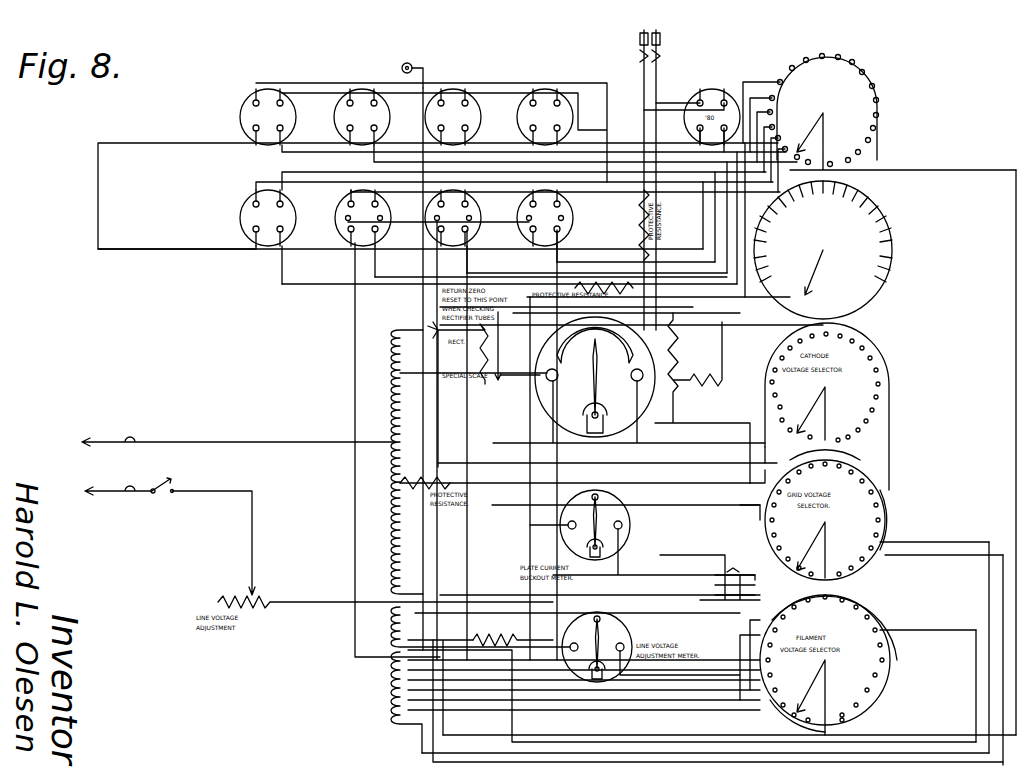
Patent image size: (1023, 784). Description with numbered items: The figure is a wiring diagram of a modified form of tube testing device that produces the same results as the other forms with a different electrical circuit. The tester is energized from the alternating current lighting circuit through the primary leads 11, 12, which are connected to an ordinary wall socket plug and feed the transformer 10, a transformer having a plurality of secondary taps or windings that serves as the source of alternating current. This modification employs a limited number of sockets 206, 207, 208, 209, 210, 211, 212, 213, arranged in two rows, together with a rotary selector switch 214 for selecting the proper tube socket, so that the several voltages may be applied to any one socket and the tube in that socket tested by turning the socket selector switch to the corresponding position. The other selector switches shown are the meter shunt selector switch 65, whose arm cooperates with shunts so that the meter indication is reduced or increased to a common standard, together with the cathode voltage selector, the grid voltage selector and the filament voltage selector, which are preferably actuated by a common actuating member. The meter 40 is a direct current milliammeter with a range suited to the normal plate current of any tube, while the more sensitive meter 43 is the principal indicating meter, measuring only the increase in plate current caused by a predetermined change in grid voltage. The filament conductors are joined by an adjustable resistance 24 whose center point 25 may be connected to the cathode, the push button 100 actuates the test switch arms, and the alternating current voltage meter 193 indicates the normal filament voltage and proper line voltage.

The tube socket 206 is at (270, 88).
The tube socket 207 is at (362, 88).
The tube socket 208 is at (458, 88).
The tube socket 209 is at (552, 88).
The tube socket 210 is at (240, 217).
The tube socket 211 is at (340, 232).
The tube socket 212 is at (472, 230).
The tube socket 213 is at (574, 217).
The rotary selector switch 214 is at (865, 92).
The selector switch 65 is at (860, 246).
The meter 43 is at (540, 400).
The primary lead 11 is at (240, 442).
The primary lead 12 is at (213, 493).
The transformer 10 is at (396, 535).
The meter 40 is at (565, 540).
The push button 100 is at (727, 565).
The center point 25 is at (500, 638).
The adjustable resistance 24 is at (500, 648).
The alternating current voltage meter 193 is at (636, 627).